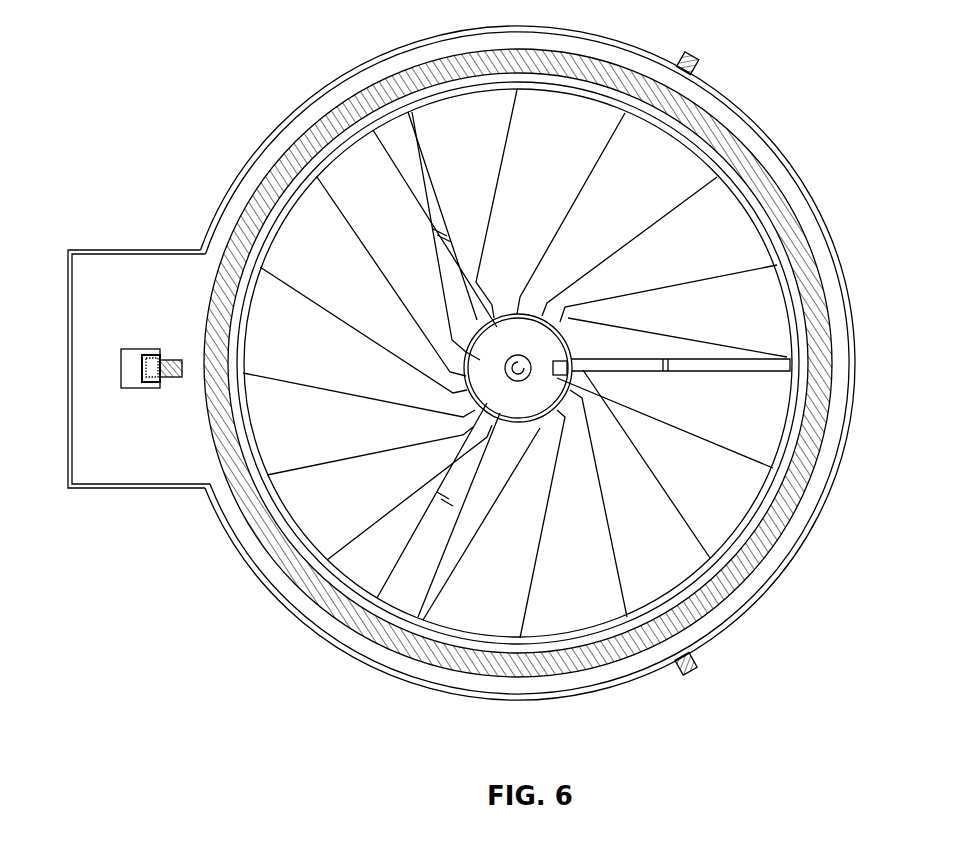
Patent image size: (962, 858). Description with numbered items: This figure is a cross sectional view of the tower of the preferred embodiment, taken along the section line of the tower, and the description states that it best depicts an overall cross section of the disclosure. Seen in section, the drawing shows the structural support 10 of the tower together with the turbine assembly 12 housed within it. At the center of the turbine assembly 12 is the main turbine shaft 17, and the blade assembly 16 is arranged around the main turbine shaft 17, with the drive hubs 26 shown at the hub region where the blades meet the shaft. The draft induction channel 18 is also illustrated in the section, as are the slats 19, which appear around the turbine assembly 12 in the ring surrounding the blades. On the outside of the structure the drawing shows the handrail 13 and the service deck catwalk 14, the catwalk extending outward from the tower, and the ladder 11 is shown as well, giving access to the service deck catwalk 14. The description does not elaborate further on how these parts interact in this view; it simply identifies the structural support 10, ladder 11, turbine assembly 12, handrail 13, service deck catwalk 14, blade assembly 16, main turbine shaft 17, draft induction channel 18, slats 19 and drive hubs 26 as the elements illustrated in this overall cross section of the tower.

The structural support 10 is at (690, 52).
The ladder 11 is at (140, 367).
The turbine assembly 12 is at (805, 341).
The handrail 13 is at (826, 208).
The service deck catwalk 14 is at (92, 418).
The blade assembly 16 is at (673, 493).
The main turbine shaft 17 is at (535, 363).
The draft induction channel 18 is at (608, 410).
The slats 19 is at (820, 410).
The drive hubs 26 is at (480, 352).